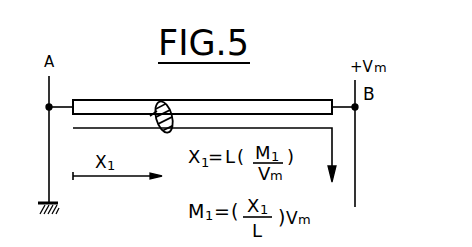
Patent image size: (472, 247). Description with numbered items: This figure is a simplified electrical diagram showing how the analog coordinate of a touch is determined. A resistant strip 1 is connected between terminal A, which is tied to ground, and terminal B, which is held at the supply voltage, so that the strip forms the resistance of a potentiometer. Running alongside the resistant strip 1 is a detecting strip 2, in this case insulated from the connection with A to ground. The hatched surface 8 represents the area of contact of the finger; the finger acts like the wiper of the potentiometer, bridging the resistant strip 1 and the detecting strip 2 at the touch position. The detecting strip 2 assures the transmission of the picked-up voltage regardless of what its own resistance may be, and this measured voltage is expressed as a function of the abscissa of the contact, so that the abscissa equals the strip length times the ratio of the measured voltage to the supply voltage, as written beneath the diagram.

The resistant strip 1 is at (285, 108).
The detecting strip 2 is at (100, 127).
The hatched surface 8 is at (157, 112).